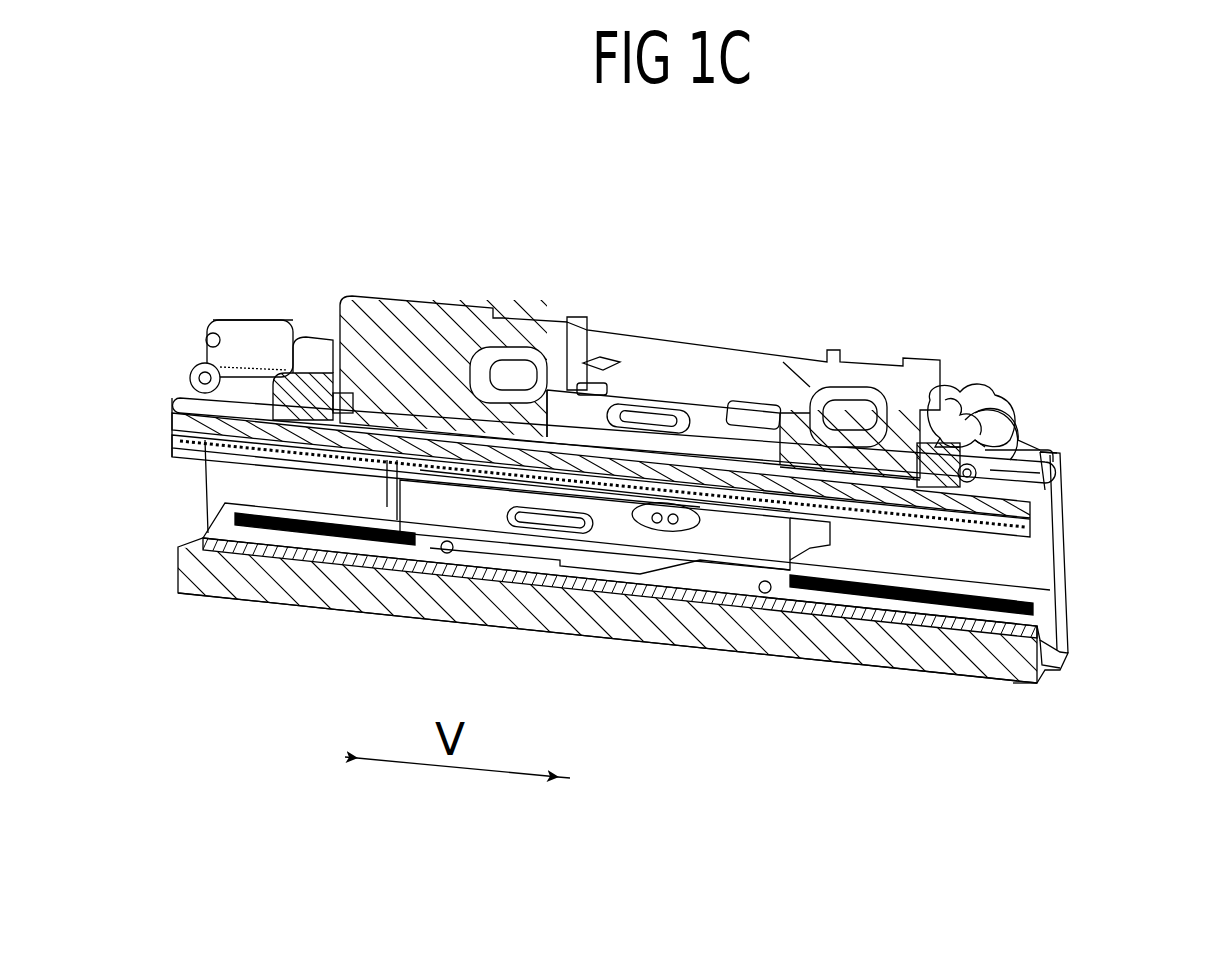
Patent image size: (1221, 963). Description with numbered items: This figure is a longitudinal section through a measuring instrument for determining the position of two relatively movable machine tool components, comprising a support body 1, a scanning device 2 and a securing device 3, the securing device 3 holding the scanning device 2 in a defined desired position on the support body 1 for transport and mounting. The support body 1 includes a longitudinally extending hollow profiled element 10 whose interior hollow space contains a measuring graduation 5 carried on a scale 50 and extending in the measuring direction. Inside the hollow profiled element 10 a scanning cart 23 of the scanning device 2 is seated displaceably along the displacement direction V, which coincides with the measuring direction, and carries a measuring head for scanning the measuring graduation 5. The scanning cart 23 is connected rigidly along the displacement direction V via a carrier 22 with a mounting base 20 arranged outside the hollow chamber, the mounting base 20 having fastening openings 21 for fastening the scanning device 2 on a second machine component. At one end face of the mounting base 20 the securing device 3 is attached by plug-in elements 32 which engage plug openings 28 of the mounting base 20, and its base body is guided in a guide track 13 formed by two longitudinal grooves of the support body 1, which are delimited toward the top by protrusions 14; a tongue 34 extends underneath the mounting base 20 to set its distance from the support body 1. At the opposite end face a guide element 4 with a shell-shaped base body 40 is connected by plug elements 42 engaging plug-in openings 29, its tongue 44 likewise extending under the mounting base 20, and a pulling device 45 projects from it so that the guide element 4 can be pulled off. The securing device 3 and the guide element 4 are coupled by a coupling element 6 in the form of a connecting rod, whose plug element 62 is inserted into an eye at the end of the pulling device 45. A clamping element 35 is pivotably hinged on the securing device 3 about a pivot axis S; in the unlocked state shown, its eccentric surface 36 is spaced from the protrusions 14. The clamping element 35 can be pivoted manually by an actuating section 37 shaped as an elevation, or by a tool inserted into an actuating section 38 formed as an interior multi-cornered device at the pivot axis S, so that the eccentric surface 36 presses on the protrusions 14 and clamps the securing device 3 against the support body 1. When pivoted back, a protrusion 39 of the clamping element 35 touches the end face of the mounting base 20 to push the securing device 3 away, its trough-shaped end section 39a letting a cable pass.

The support body 1 is at (1065, 550).
The scanning device 2 is at (870, 543).
The securing device 3 is at (1097, 392).
The guide element 4 is at (323, 317).
The measuring graduation 5 is at (1005, 592).
The coupling element 6 is at (257, 317).
The hollow profiled element 10 is at (190, 568).
The guide track 13 is at (1027, 477).
The protrusion 14 is at (1055, 461).
The mounting base 20 is at (687, 363).
The fastening openings 21 is at (510, 377).
The carrier 22 is at (820, 540).
The scanning cart 23 is at (665, 567).
The plug openings 28 is at (884, 415).
The plug-in openings 29 is at (333, 395).
The plug-in elements 32 is at (1040, 675).
The tongue 34 is at (1013, 687).
The clamping element 35 is at (980, 390).
The eccentric surface 36 is at (1030, 447).
The actuating section 37 is at (1005, 415).
The actuating section 38 is at (1035, 448).
The protrusion 39 is at (953, 375).
The end section 39a is at (945, 397).
The base body 40 is at (307, 390).
The plug elements 42 is at (340, 395).
The tongue 44 is at (350, 403).
The pulling device 45 is at (200, 363).
The scale 50 is at (1035, 621).
The plug element 62 is at (215, 335).
The pivot axis S is at (1007, 500).